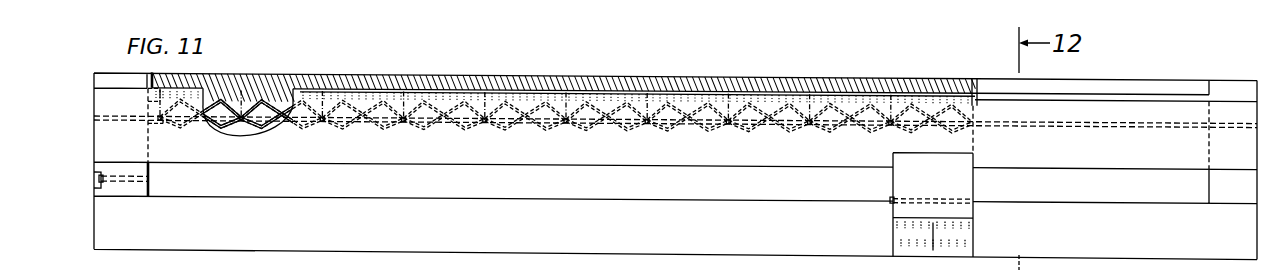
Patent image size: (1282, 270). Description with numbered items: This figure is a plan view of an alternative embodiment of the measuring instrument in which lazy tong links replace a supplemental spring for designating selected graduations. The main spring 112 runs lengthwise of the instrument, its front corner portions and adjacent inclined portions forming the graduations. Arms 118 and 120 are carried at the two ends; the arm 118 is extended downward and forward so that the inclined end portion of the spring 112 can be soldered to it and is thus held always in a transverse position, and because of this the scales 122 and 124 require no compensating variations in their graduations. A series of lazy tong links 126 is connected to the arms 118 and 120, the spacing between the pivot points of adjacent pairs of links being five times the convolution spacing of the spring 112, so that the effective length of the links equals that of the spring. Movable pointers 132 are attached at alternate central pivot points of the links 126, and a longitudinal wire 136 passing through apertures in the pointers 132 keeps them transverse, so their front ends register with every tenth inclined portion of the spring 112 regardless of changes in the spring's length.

The main spring 112 is at (616, 79).
The arm 118 is at (977, 128).
The arm 120 is at (150, 138).
The scale 122 is at (984, 246).
The scale 124 is at (976, 226).
The lazy tong links 126 is at (552, 125).
The movable pointers 132 is at (242, 88).
The longitudinal wire 136 is at (363, 124).